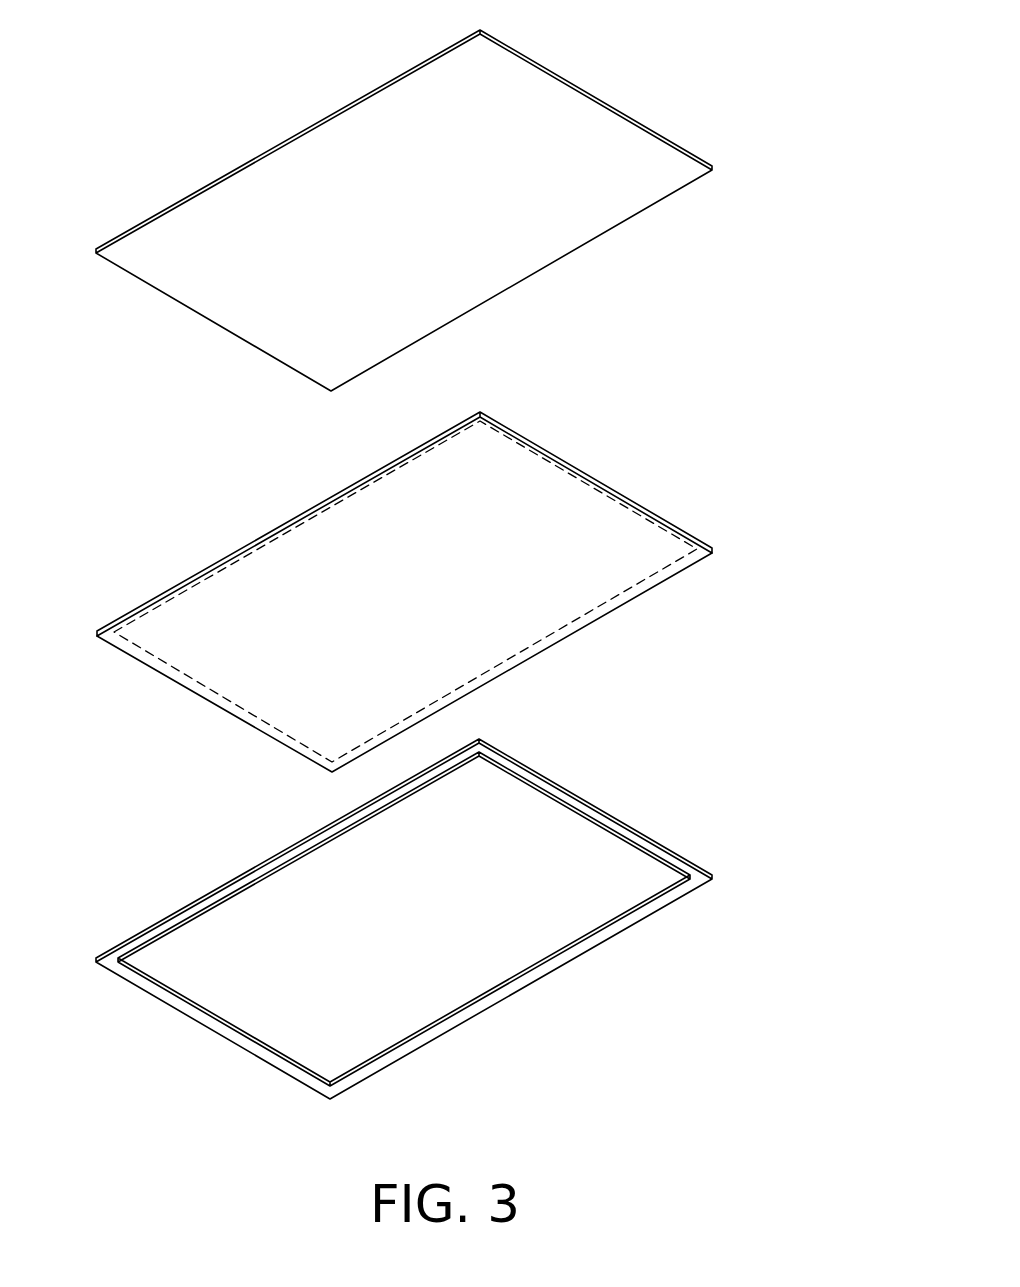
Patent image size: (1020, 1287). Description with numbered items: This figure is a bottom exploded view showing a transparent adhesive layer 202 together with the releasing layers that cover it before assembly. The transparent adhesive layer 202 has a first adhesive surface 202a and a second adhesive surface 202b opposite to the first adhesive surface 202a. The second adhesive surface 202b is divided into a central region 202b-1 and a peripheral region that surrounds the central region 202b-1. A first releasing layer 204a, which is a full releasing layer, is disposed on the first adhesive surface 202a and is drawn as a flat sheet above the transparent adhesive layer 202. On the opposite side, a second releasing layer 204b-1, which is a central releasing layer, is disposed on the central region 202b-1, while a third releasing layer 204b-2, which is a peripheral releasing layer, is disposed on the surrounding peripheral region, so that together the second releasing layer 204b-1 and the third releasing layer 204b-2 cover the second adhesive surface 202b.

The first releasing layer 204a is at (687, 150).
The transparent adhesive layer 202 is at (463, 592).
The first adhesive surface 202a is at (664, 506).
The second adhesive surface 202b is at (703, 565).
The central region 202b-1 is at (587, 618).
The second releasing layer 204b-1 is at (475, 919).
The third releasing layer 204b-2 is at (667, 902).